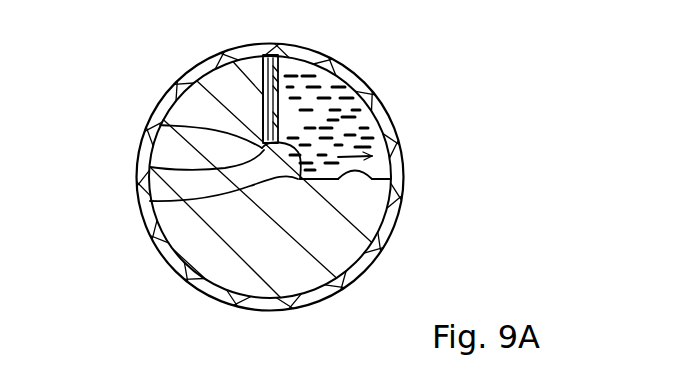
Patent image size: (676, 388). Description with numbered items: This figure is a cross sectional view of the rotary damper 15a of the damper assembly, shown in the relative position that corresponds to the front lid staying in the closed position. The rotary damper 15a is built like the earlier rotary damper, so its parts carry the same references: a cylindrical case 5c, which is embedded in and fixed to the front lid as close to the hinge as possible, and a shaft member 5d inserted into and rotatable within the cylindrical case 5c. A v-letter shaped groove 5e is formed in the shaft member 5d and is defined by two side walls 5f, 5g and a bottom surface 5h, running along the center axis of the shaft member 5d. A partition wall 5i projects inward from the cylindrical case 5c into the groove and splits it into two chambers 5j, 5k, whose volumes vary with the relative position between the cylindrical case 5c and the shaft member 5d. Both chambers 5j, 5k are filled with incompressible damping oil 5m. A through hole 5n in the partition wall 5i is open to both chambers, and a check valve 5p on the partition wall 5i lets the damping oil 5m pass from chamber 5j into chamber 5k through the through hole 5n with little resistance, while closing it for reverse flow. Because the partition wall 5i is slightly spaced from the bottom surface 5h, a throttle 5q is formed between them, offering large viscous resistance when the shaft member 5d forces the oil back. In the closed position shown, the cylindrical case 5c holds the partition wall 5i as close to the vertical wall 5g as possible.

The rotary damper 15a is at (445, 38).
The cylindrical case 5c is at (153, 243).
The shaft member 5d is at (360, 233).
The v-letter shaped groove 5e is at (384, 160).
The side wall 5f is at (403, 196).
The side wall 5g is at (160, 125).
The bottom surface 5h is at (150, 201).
The partition wall 5i is at (288, 62).
The chamber 5j is at (380, 118).
The chamber 5k is at (250, 47).
The damping oil 5m is at (318, 131).
The through hole 5n is at (278, 110).
The check valve 5p is at (263, 98).
The throttle 5q is at (150, 167).